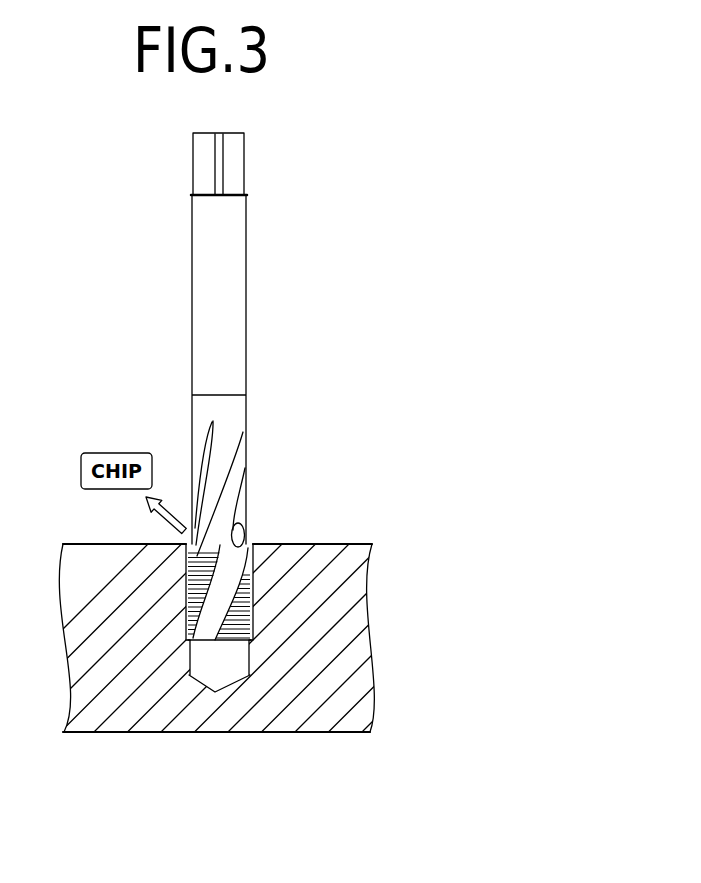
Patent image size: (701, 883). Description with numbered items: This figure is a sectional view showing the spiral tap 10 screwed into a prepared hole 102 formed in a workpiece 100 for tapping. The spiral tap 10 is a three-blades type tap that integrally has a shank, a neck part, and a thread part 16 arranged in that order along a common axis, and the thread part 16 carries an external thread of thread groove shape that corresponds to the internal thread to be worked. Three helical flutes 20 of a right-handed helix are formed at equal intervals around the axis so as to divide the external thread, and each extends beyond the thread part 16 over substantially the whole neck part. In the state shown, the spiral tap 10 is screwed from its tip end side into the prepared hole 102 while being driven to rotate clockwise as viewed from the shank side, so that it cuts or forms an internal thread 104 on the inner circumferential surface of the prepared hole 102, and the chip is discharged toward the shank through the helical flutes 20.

The spiral tap 10 is at (266, 412).
The helical flutes 20 is at (238, 478).
The internal thread 104 is at (233, 545).
The thread part 16 is at (280, 601).
The workpiece 100 is at (275, 667).
The prepared hole 102 is at (246, 657).